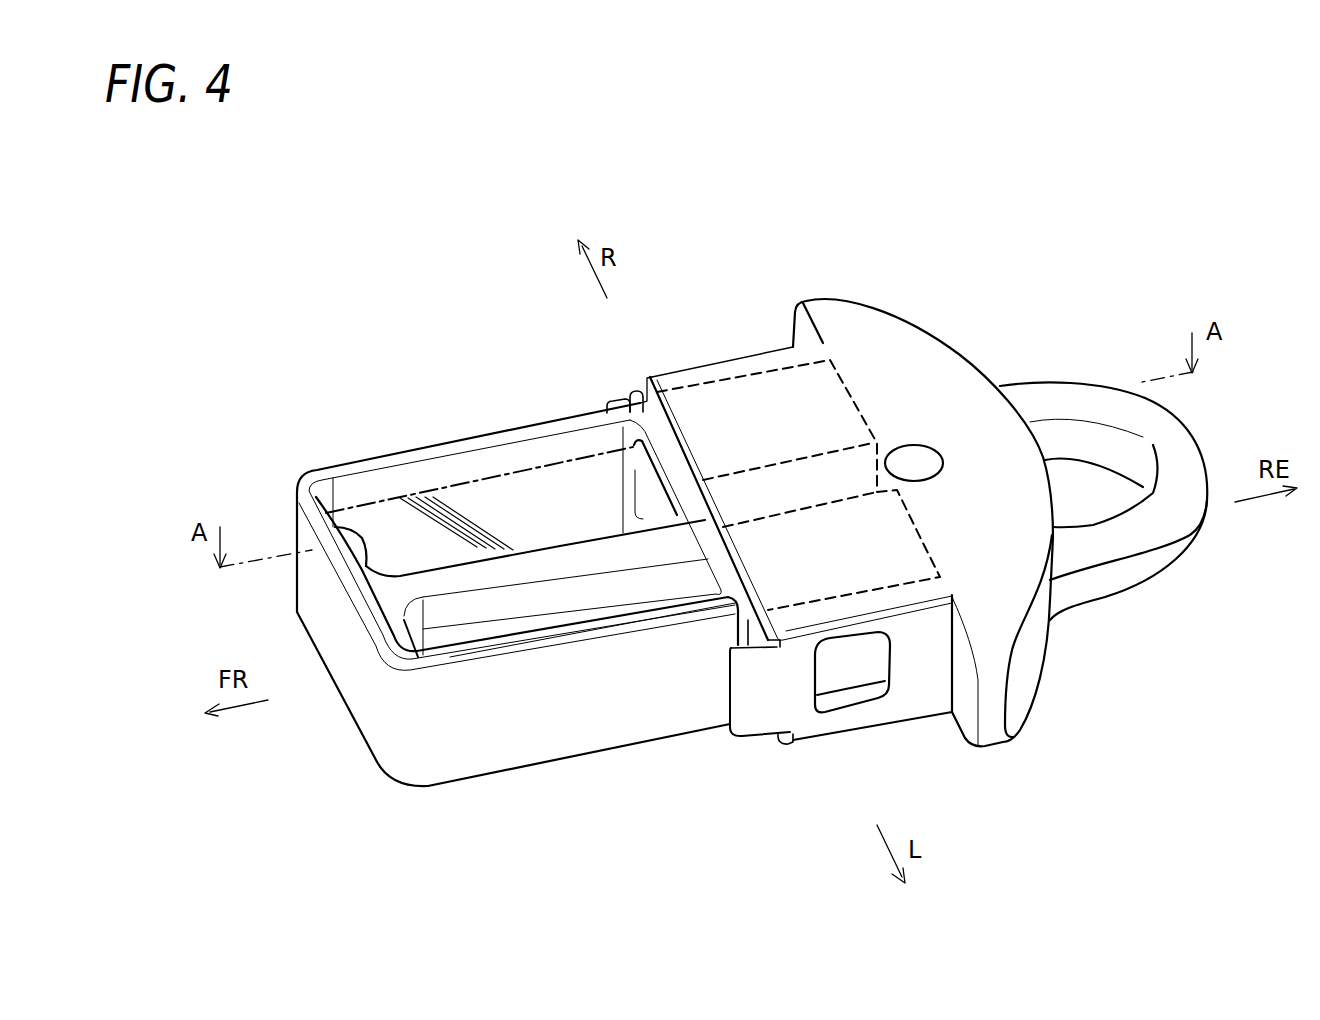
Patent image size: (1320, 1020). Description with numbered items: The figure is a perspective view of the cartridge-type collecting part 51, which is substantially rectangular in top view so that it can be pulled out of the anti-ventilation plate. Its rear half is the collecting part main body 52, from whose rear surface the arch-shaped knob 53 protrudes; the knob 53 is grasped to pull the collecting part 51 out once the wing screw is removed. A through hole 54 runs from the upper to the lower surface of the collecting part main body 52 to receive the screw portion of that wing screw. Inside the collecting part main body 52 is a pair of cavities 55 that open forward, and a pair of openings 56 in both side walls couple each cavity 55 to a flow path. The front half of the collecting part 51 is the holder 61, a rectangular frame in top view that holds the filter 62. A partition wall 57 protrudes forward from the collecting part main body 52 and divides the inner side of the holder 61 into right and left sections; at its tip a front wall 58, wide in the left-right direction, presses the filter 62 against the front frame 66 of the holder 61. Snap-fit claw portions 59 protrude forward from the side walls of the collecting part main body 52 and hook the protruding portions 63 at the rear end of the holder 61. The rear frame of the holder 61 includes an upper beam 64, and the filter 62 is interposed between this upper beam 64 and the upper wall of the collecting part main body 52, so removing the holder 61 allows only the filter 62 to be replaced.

The collecting part 51 is at (1017, 270).
The collecting part main body 52 is at (888, 330).
The knob 53 is at (1173, 440).
The through hole 54 is at (922, 444).
The cavity 55 is at (721, 380).
The opening 56 is at (820, 677).
The partition wall 57 is at (520, 551).
The front wall 58 is at (365, 565).
The claw portion 59 is at (613, 401).
The holder 61 is at (503, 431).
The filter 62 is at (427, 493).
The protruding portion 63 is at (636, 392).
The upper beam 64 is at (700, 497).
The front frame 66 is at (320, 618).